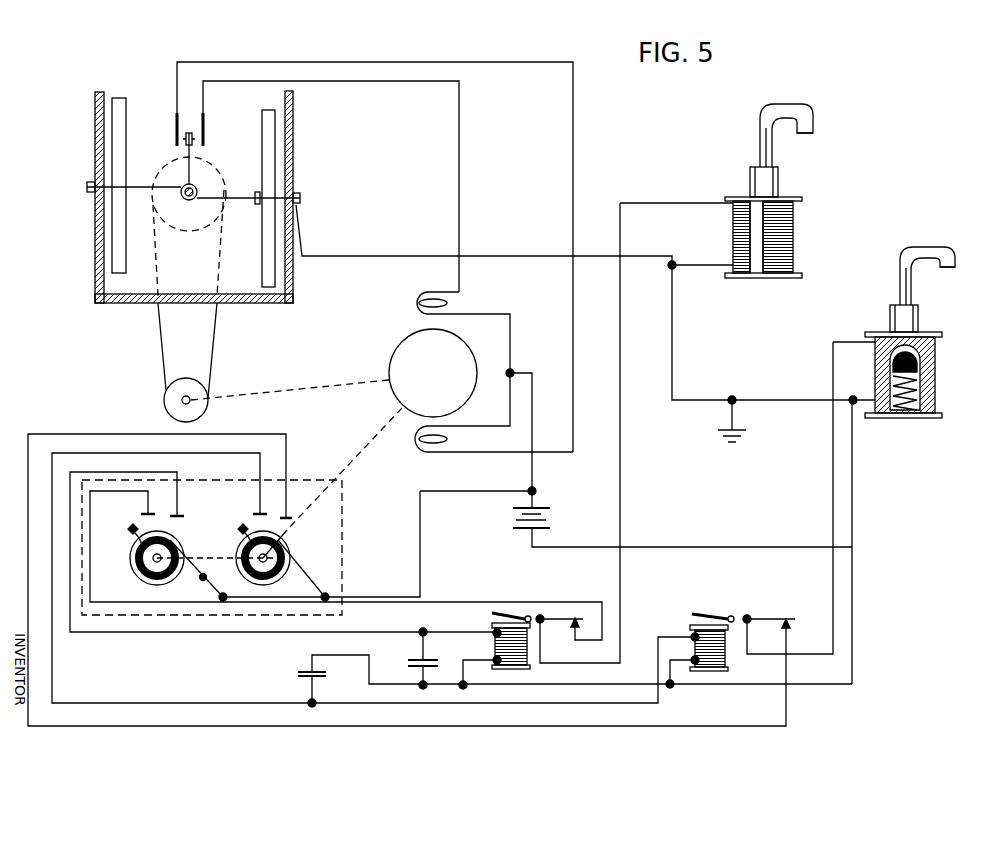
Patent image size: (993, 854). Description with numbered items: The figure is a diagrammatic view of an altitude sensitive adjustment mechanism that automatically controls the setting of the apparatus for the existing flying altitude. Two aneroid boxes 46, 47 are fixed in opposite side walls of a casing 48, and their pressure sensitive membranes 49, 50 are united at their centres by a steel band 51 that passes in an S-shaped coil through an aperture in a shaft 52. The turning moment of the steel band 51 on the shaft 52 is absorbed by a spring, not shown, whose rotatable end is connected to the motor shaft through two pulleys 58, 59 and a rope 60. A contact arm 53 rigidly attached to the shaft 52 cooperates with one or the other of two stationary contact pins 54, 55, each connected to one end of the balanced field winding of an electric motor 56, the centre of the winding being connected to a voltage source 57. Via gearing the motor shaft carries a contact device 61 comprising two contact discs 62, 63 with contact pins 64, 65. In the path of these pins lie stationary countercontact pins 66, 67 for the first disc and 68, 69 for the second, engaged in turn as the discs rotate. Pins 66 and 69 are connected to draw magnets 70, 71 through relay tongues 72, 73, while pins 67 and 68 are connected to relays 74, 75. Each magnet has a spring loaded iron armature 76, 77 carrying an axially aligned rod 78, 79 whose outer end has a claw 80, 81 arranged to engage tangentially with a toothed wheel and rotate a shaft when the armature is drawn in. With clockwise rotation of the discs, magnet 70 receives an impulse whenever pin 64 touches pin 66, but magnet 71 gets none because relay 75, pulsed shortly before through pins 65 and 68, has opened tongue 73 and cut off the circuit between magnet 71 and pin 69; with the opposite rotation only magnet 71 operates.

The aneroid box 46 is at (100, 92).
The aneroid box 47 is at (270, 148).
The casing 48 is at (131, 304).
The pressure sensitive membrane 49 is at (126, 248).
The pressure sensitive membrane 50 is at (258, 238).
The steel band 51 is at (142, 185).
The shaft 52 is at (197, 190).
The contact arm 53 is at (190, 170).
The stationary contact pin 54 is at (175, 145).
The stationary contact pin 55 is at (205, 145).
The electric motor 56 is at (390, 390).
The voltage source 57 is at (537, 506).
The pulley 58 is at (152, 203).
The pulley 59 is at (166, 392).
The rope 60 is at (158, 340).
The contact device 61 is at (345, 560).
The contact disc 62 is at (160, 581).
The contact disc 63 is at (268, 581).
The contact pin 64 is at (128, 529).
The contact pin 65 is at (238, 529).
The stationary countercontact pin 66 is at (144, 513).
The stationary countercontact pin 67 is at (180, 514).
The stationary countercontact pin 68 is at (257, 512).
The stationary countercontact pin 69 is at (287, 514).
The draw magnet 70 is at (794, 247).
The draw magnet 71 is at (936, 372).
The relay tongue 72 is at (562, 618).
The relay tongue 73 is at (767, 619).
The relay 74 is at (497, 640).
The relay 75 is at (697, 650).
The iron armature 76 is at (778, 188).
The iron armature 77 is at (920, 323).
The rod 78 is at (773, 153).
The rod 79 is at (912, 289).
The claw 80 is at (815, 118).
The claw 81 is at (950, 253).